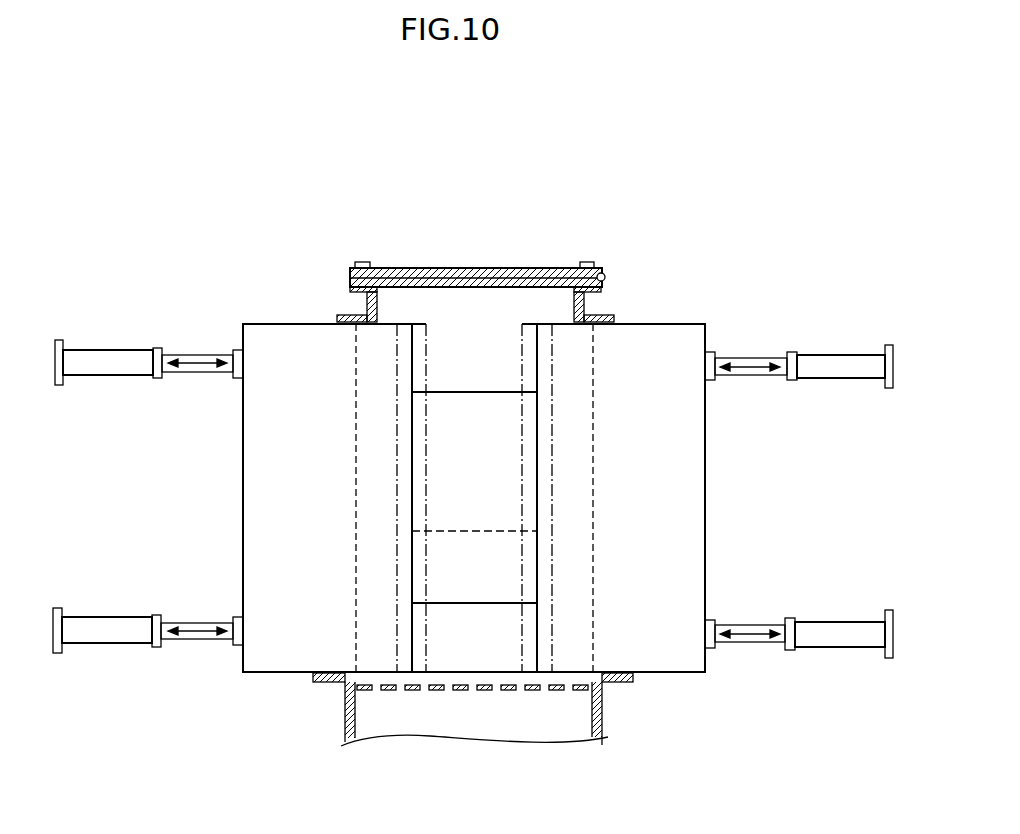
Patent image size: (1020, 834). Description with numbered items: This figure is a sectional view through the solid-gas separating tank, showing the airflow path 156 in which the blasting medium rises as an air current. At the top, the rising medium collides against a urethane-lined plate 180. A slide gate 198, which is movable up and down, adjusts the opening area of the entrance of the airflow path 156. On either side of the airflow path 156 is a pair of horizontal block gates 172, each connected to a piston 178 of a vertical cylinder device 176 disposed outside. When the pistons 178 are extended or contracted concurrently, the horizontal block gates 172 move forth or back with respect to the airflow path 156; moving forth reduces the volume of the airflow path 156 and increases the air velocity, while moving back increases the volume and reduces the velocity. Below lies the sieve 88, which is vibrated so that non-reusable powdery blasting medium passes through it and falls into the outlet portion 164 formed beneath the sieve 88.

The sieve 88 is at (440, 683).
The airflow path 156 is at (478, 427).
The outlet portion 164 is at (483, 728).
The horizontal block gate 172 is at (293, 507).
The vertical cylinder device 176 is at (105, 357).
The piston 178 is at (202, 355).
The urethane-lined plate 180 is at (537, 277).
The slide gate 198 is at (450, 390).